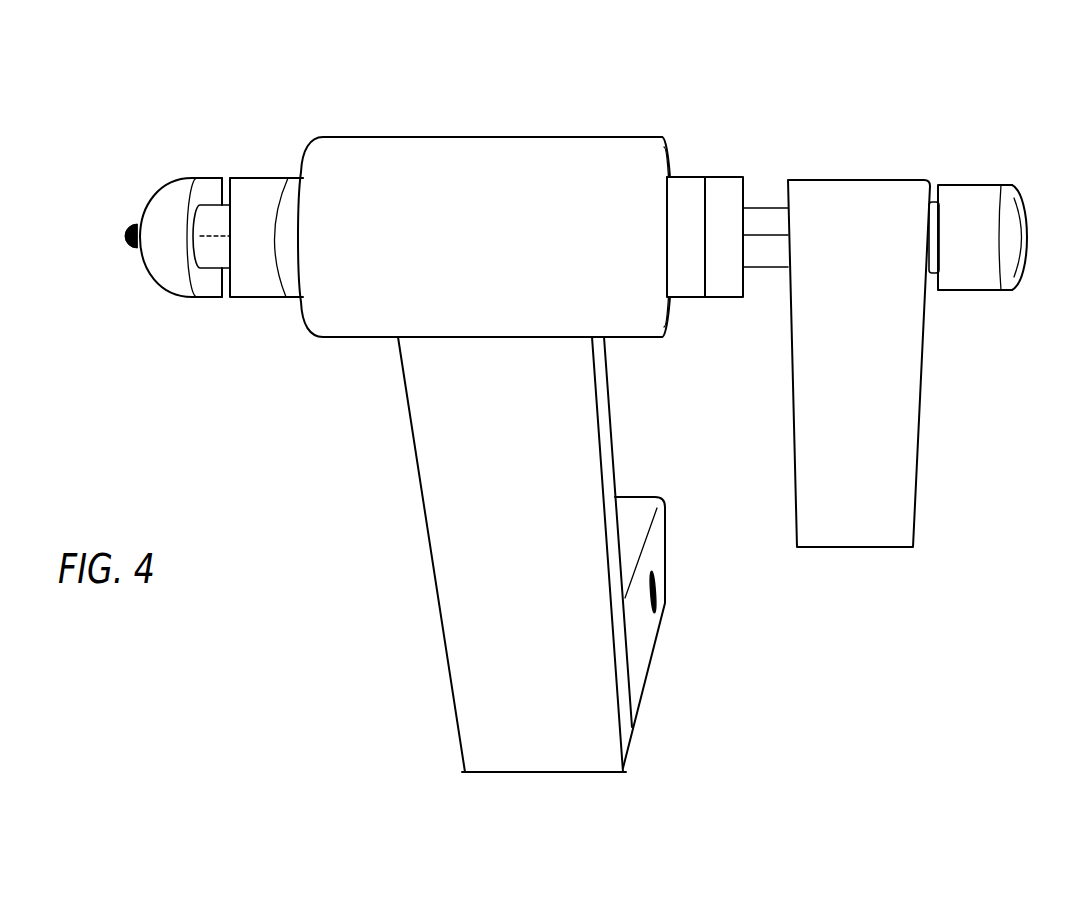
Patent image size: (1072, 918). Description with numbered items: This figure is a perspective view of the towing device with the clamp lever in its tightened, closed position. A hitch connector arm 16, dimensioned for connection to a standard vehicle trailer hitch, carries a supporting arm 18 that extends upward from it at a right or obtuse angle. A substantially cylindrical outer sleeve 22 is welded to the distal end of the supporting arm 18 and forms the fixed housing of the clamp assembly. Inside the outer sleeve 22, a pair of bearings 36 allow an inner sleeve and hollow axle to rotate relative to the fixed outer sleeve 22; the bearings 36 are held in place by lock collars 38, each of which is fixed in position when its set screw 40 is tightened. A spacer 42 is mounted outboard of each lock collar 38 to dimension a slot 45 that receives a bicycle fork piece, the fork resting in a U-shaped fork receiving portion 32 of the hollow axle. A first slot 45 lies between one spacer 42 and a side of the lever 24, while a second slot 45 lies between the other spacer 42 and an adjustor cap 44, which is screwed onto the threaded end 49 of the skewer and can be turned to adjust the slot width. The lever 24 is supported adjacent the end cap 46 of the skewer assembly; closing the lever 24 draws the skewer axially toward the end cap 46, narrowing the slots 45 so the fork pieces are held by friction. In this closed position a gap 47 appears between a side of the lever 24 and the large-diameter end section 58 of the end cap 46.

The hitch connector arm 16 is at (650, 644).
The supporting arm 18 is at (535, 572).
The outer sleeve 22 is at (492, 247).
The lever 24 is at (870, 380).
The fork receiving portion 32 is at (227, 270).
The bearing 36 is at (669, 307).
The lock collar 38 is at (289, 178).
The set screw 40 is at (692, 187).
The spacer 42 is at (260, 183).
The adjustor cap 44 is at (165, 195).
The slot 45 is at (222, 186).
The end cap 46 is at (980, 185).
The gap 47 is at (932, 200).
The threaded end 49 is at (124, 242).
The end section 58 is at (969, 247).